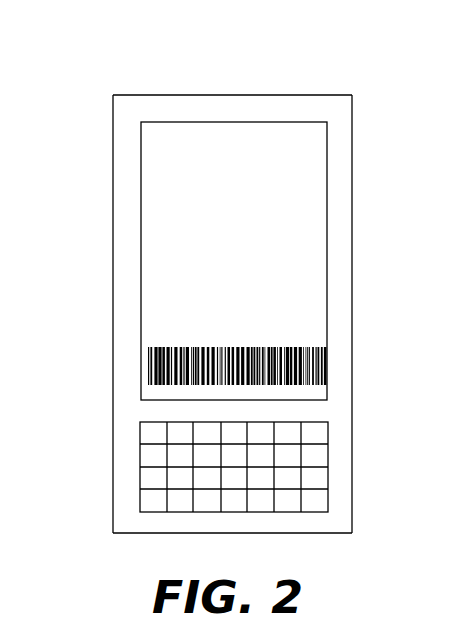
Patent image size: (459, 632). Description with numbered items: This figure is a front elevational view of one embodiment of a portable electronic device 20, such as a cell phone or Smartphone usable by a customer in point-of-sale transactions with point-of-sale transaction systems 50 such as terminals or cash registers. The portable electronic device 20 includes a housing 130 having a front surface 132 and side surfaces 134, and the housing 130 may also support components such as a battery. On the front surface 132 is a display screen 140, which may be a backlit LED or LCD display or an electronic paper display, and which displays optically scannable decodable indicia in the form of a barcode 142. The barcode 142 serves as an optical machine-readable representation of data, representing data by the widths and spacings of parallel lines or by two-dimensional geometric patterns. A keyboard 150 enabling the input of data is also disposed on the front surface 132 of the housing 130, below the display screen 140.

The portable electronic device 20 is at (106, 71).
The housing 130 is at (111, 205).
The front surface 132 is at (119, 281).
The side surfaces 134 is at (112, 439).
The display screen 140 is at (153, 147).
The barcode 142 is at (150, 363).
The point-of-sale transaction systems 50 is at (146, 392).
The keyboard 150 is at (148, 478).